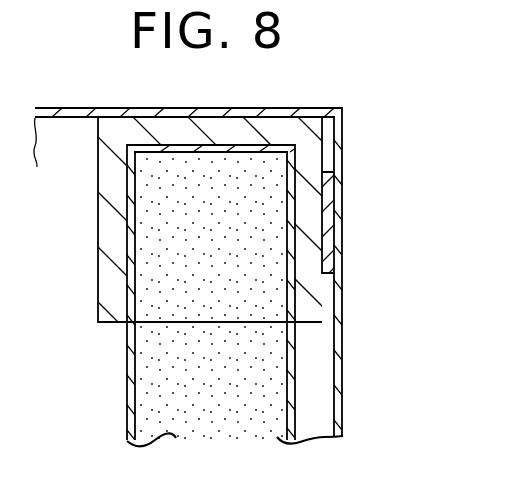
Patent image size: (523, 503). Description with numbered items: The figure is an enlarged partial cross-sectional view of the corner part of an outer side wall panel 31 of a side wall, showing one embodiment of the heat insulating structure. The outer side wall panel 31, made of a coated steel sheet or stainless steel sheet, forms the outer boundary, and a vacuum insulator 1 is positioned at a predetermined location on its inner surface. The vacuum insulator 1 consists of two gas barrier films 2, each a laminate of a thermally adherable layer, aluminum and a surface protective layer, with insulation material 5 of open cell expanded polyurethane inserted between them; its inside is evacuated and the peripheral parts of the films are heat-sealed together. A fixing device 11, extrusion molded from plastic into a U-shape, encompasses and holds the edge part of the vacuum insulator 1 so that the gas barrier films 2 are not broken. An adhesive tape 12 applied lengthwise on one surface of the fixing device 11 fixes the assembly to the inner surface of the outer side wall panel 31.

The vacuum insulator 1 is at (126, 408).
The gas barrier film 2 is at (127, 364).
The insulation material 5 is at (200, 390).
The fixing device 11 is at (97, 225).
The adhesive tape 12 is at (329, 207).
The outer side wall panel 31 is at (344, 383).